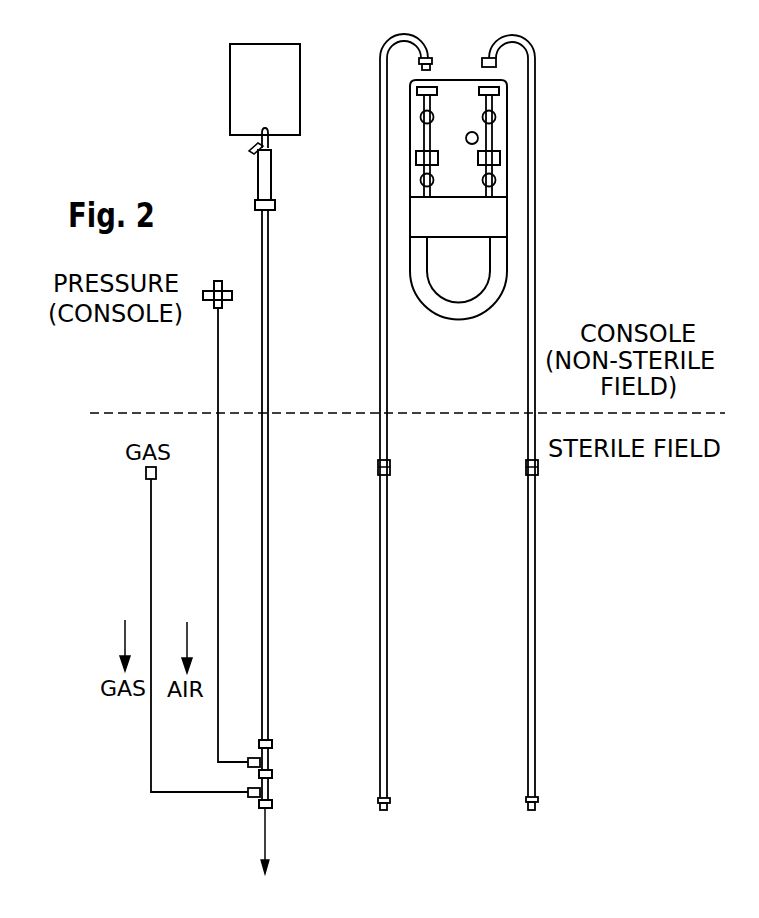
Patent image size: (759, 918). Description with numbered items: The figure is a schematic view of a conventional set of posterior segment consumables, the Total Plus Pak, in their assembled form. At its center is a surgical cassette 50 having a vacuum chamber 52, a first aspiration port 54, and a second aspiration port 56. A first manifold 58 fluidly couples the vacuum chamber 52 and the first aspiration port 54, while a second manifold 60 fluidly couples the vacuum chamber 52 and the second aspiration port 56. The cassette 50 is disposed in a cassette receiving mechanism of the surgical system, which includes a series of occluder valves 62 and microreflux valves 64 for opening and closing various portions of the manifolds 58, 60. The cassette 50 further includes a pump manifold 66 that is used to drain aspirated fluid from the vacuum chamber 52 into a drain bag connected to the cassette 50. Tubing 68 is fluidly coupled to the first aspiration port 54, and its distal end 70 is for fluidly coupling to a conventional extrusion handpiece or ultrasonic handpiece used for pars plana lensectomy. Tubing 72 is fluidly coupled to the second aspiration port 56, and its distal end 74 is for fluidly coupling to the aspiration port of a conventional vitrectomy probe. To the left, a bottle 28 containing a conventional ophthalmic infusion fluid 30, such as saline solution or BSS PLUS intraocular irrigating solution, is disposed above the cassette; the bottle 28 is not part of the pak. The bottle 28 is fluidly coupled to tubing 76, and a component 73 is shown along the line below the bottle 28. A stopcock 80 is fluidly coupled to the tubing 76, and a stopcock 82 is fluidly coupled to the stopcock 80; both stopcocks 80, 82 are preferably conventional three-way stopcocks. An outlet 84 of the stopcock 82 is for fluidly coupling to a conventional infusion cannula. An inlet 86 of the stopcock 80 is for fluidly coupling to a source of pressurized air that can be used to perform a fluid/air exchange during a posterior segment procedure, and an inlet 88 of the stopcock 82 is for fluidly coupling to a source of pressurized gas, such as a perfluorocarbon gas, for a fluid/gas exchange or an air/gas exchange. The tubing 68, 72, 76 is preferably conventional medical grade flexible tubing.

The bottle 28 is at (230, 104).
The ophthalmic infusion fluid 30 is at (274, 109).
The surgical cassette 50 is at (452, 80).
The vacuum chamber 52 is at (468, 232).
The first aspiration port 54 is at (417, 91).
The second aspiration port 56 is at (499, 91).
The first manifold 58 is at (417, 142).
The second manifold 60 is at (495, 131).
The occluder valves 62 is at (420, 117).
The microreflux valves 64 is at (500, 158).
The pump manifold 66 is at (490, 270).
The tubing 68 is at (380, 516).
The distal end 70 is at (378, 806).
The tubing 72 is at (528, 580).
The pressure regulator 73 is at (258, 181).
The distal end 74 is at (526, 801).
The tubing 76 is at (268, 619).
The stopcock 80 is at (272, 753).
The stopcock 82 is at (272, 785).
The outlet 84 is at (262, 808).
The inlet 86 is at (248, 757).
The inlet 88 is at (248, 798).